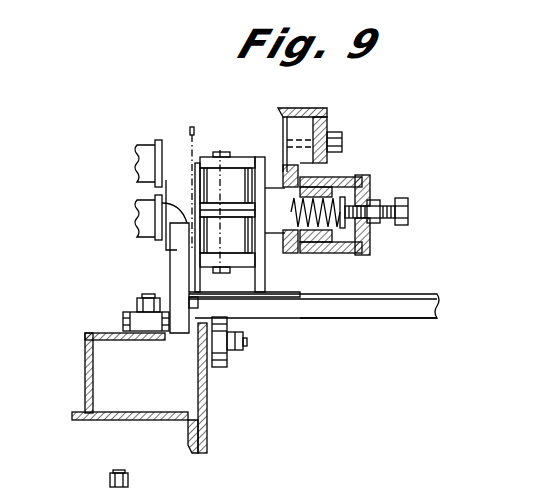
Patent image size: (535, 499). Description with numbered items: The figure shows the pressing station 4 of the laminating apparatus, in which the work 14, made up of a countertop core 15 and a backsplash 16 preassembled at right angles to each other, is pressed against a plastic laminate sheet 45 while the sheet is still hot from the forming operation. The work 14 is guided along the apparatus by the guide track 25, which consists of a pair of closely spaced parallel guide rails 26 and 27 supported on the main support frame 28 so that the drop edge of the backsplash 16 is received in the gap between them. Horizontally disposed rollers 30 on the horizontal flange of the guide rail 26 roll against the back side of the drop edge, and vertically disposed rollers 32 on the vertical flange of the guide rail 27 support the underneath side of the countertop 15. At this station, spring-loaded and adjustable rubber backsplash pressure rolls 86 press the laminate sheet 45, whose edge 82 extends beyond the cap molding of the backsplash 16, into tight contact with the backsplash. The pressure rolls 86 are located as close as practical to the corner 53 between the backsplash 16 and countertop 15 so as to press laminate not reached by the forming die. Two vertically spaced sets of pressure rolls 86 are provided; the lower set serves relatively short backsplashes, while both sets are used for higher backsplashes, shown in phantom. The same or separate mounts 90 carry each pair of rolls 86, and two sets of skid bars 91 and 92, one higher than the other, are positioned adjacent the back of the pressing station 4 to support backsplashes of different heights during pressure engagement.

The pressing station 4 is at (70, 218).
The work 14 is at (388, 327).
The countertop core 15 is at (314, 328).
The backsplash 16 is at (178, 252).
The guide track 25 is at (158, 375).
The guide rail 26 is at (98, 366).
The guide rail 27 is at (208, 396).
The main support frame 28 is at (117, 423).
The rollers 30 is at (122, 318).
The rollers 32 is at (228, 360).
The plastic laminate sheet 45 is at (350, 297).
The corner 53 is at (189, 300).
The edge of laminate sheet 82 is at (160, 191).
The backsplash pressure rolls 86 is at (225, 180).
The mounts 90 is at (262, 148).
The skid bars 91 is at (150, 212).
The skid bars 92 is at (152, 157).